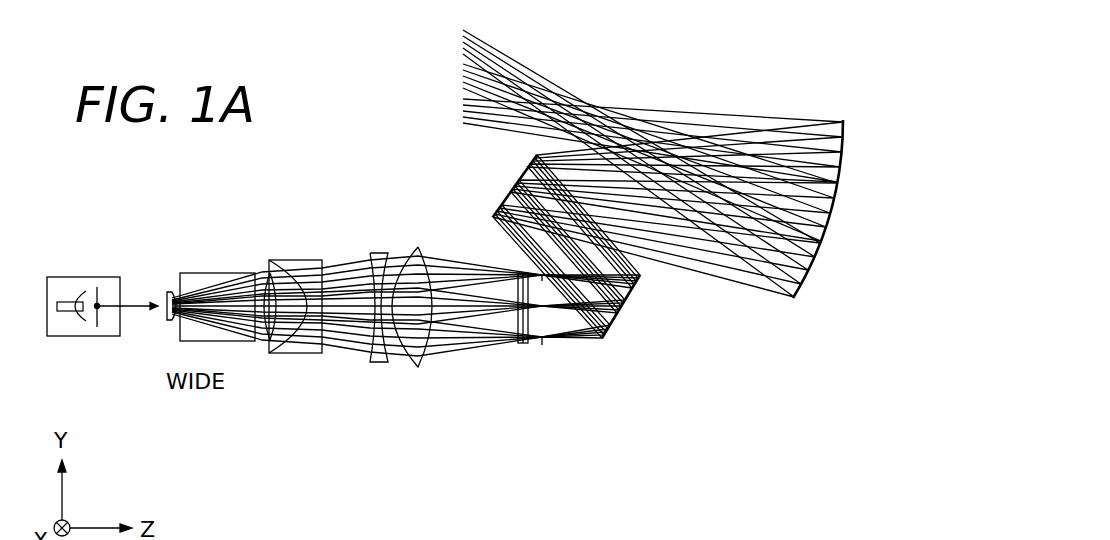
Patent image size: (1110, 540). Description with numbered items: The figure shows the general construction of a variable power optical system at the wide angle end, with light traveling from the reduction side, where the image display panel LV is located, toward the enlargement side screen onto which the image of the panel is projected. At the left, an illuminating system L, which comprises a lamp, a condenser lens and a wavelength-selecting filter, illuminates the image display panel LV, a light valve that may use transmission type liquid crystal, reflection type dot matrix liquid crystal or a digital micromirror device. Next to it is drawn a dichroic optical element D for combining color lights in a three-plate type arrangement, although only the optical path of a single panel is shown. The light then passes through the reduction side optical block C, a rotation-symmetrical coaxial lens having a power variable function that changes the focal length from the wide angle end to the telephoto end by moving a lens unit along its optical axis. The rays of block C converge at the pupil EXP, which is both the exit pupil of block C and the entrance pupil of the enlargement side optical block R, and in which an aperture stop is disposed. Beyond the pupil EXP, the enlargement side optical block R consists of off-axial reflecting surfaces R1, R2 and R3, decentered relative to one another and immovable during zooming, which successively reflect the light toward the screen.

The illuminating system L is at (68, 279).
The image display panel (light valve) LV is at (165, 296).
The dichroic optical element D is at (222, 272).
The reduction side optical block C is at (543, 378).
The pupil EXP is at (545, 344).
The enlargement side optical block R is at (654, 187).
The reflecting surface R1 is at (622, 302).
The reflecting surface R2 is at (518, 185).
The reflecting surface R3 is at (842, 206).